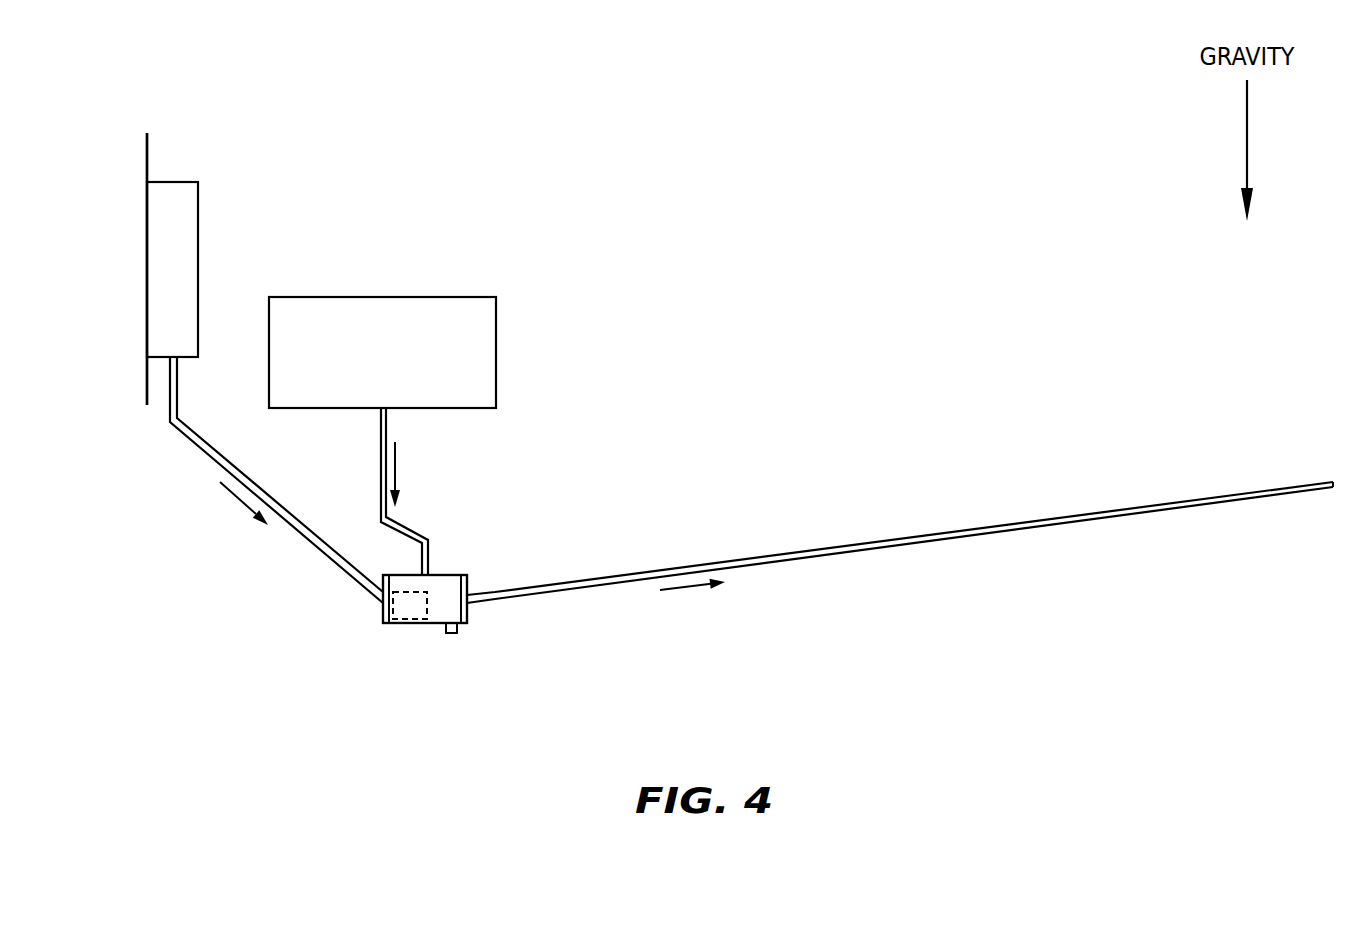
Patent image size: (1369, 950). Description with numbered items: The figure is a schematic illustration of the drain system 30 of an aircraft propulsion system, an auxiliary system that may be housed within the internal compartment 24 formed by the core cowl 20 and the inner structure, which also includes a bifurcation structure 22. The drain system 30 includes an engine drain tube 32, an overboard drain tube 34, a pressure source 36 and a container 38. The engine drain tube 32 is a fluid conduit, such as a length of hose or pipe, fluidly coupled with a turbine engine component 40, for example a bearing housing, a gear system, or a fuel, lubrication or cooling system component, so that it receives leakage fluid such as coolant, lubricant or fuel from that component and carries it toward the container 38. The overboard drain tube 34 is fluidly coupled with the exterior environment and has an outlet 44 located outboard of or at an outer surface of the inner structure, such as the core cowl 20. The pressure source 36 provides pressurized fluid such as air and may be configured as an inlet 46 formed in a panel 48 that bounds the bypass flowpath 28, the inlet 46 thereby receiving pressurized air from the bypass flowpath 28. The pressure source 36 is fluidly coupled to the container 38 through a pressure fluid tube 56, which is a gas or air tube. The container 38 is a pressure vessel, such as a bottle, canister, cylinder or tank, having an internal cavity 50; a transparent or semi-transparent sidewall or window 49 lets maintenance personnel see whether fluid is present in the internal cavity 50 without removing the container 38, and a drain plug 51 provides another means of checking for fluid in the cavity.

The core cowl 20 is at (121, 396).
The bifurcation structure 22 is at (121, 396).
The internal compartment 24 is at (628, 445).
The bypass flowpath 28 is at (60, 248).
The drain system 30 is at (816, 126).
The engine drain tube 32 is at (405, 525).
The overboard drain tube 34 is at (796, 550).
The pressure source 36 is at (198, 222).
The container 38 is at (418, 623).
The turbine engine component 40 is at (496, 333).
The outlet 44 is at (1334, 483).
The inlet 46 is at (147, 290).
The panel 48 is at (147, 157).
The window 49 is at (395, 618).
The internal cavity 50 is at (447, 585).
The drain plug 51 is at (452, 633).
The pressure fluid tube 56 is at (298, 535).